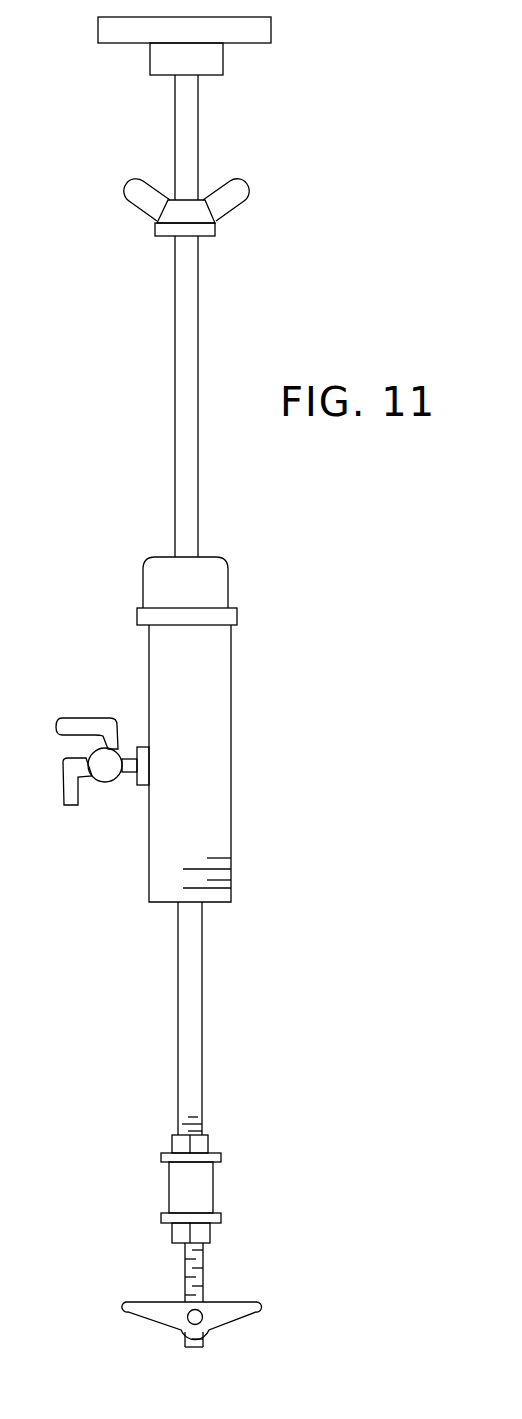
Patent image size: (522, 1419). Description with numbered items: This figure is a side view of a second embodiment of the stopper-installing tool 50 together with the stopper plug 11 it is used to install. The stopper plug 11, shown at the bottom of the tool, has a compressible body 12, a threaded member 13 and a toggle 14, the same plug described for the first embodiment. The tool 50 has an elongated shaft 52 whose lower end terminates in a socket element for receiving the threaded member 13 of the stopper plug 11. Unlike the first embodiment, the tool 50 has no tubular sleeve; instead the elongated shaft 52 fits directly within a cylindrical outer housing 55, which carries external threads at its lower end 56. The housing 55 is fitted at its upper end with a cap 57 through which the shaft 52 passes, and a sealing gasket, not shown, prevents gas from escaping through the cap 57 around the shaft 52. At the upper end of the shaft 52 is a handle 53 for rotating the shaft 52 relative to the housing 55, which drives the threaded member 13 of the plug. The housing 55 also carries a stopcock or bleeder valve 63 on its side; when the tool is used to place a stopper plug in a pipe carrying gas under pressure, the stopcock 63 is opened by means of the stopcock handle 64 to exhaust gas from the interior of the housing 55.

The stopper plug 11 is at (142, 1178).
The compressible body 12 is at (208, 1183).
The threaded member 13 is at (203, 1277).
The toggle 14 is at (256, 1332).
The tool 50 is at (243, 702).
The elongated shaft 52 is at (175, 413).
The handle 53 is at (253, 43).
The cylindrical outer housing 55 is at (220, 786).
The lower end 56 is at (228, 888).
The cap 57 is at (230, 578).
The stopcock 63 is at (110, 796).
The stopcock handle 64 is at (80, 722).